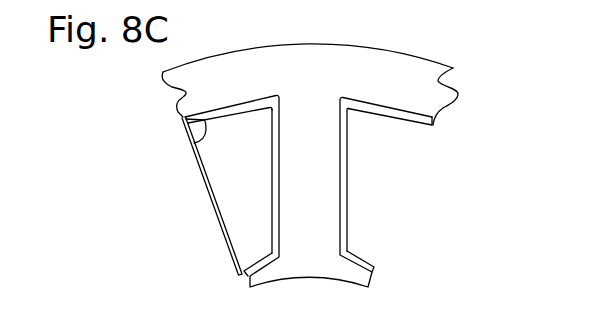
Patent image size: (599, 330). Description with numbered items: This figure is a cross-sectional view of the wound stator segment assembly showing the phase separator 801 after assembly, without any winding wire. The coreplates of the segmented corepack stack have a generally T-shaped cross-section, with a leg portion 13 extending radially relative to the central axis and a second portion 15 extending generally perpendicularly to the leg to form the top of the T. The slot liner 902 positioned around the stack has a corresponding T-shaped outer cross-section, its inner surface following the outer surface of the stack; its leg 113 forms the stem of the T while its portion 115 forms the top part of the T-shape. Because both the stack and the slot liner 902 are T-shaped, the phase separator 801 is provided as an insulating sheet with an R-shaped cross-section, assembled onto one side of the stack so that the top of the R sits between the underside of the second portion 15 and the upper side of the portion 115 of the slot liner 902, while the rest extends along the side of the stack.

The second portion 15 is at (438, 78).
The leg portion 13 is at (332, 180).
The slot liner 902 is at (345, 232).
The leg of the T-shape 113 is at (272, 187).
The portion of the slot liner forming the T-shape 115 is at (392, 116).
The phase separator 801 is at (192, 142).